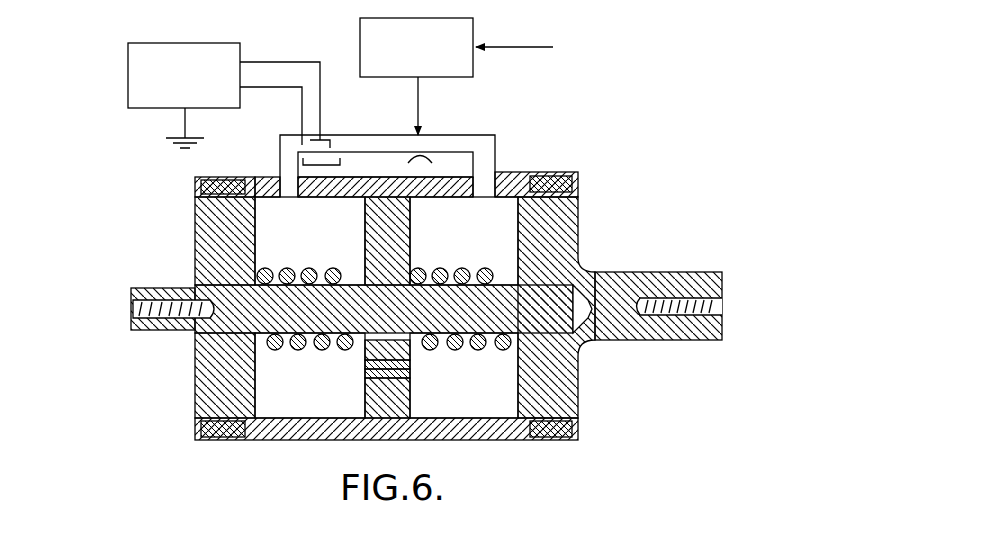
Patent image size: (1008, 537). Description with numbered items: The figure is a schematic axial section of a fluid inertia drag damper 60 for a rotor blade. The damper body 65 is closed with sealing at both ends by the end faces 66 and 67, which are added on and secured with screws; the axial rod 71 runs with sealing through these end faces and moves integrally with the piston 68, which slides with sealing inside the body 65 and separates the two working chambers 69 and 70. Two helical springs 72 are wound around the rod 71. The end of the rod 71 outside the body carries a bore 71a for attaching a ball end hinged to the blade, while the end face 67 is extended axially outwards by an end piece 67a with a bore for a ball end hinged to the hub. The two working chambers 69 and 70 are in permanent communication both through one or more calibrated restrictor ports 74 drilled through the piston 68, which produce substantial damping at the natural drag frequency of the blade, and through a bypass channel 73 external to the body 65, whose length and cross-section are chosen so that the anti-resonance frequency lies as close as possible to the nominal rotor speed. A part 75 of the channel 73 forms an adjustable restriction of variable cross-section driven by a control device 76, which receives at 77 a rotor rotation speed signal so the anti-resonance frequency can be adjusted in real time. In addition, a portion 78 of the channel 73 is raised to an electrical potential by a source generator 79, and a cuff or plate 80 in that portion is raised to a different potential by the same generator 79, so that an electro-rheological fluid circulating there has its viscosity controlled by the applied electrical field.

The fluid inertia drag damper 60 is at (582, 172).
The damper body 65 is at (271, 425).
The end face 66 is at (228, 233).
The end face 67 is at (547, 375).
The end piece 67a is at (683, 272).
The piston 68 is at (445, 412).
The working chamber 69 is at (310, 241).
The working chamber 70 is at (464, 241).
The axial rod 71 is at (207, 337).
The bore 71a is at (131, 311).
The helical springs 72 is at (299, 349).
The bypass channel 73 is at (490, 150).
The restrictor port 74 is at (332, 416).
The variable cross-section part of the bypass channel 75 is at (421, 146).
The control device 76 is at (375, 41).
The rotor rotation speed signal input 77 is at (515, 31).
The channel portion 78 is at (326, 136).
The source generator 79 is at (150, 74).
The cuff or plate 80 is at (300, 149).